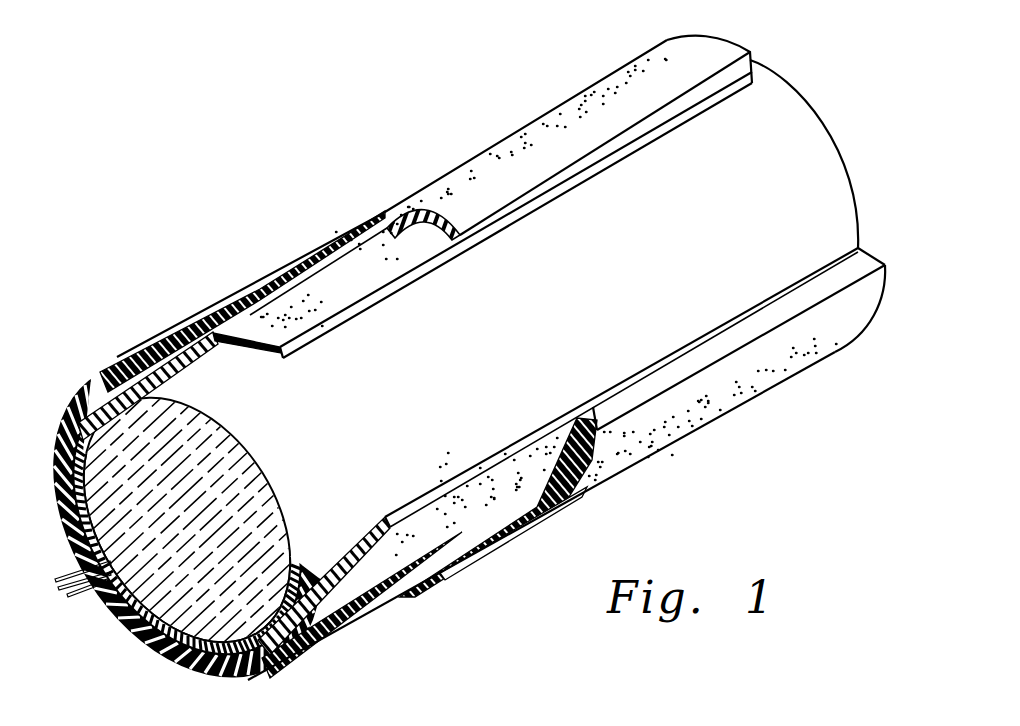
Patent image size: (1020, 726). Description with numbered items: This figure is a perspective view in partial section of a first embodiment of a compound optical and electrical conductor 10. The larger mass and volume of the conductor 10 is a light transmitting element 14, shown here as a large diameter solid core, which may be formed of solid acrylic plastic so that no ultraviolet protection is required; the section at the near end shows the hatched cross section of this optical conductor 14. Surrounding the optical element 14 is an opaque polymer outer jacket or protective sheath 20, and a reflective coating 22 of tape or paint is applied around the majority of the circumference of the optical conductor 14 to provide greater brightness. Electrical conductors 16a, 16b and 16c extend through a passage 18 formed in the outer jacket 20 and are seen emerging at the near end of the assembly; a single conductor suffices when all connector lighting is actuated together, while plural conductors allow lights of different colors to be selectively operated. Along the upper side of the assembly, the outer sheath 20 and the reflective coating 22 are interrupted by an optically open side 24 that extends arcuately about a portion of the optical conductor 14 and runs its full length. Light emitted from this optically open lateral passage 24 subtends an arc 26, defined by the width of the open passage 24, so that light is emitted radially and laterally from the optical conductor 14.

The compound optical and electrical conductor 10 is at (734, 467).
The light transmitting element 14 is at (600, 305).
The electrical conductor 16a is at (56, 578).
The electrical conductor 16b is at (60, 591).
The electrical conductor 16c is at (70, 600).
The passage 18 is at (105, 604).
The outer jacket 20 is at (355, 216).
The reflective coating 22 is at (307, 300).
The optically open side 24 is at (679, 132).
The arc 26 is at (761, 66).